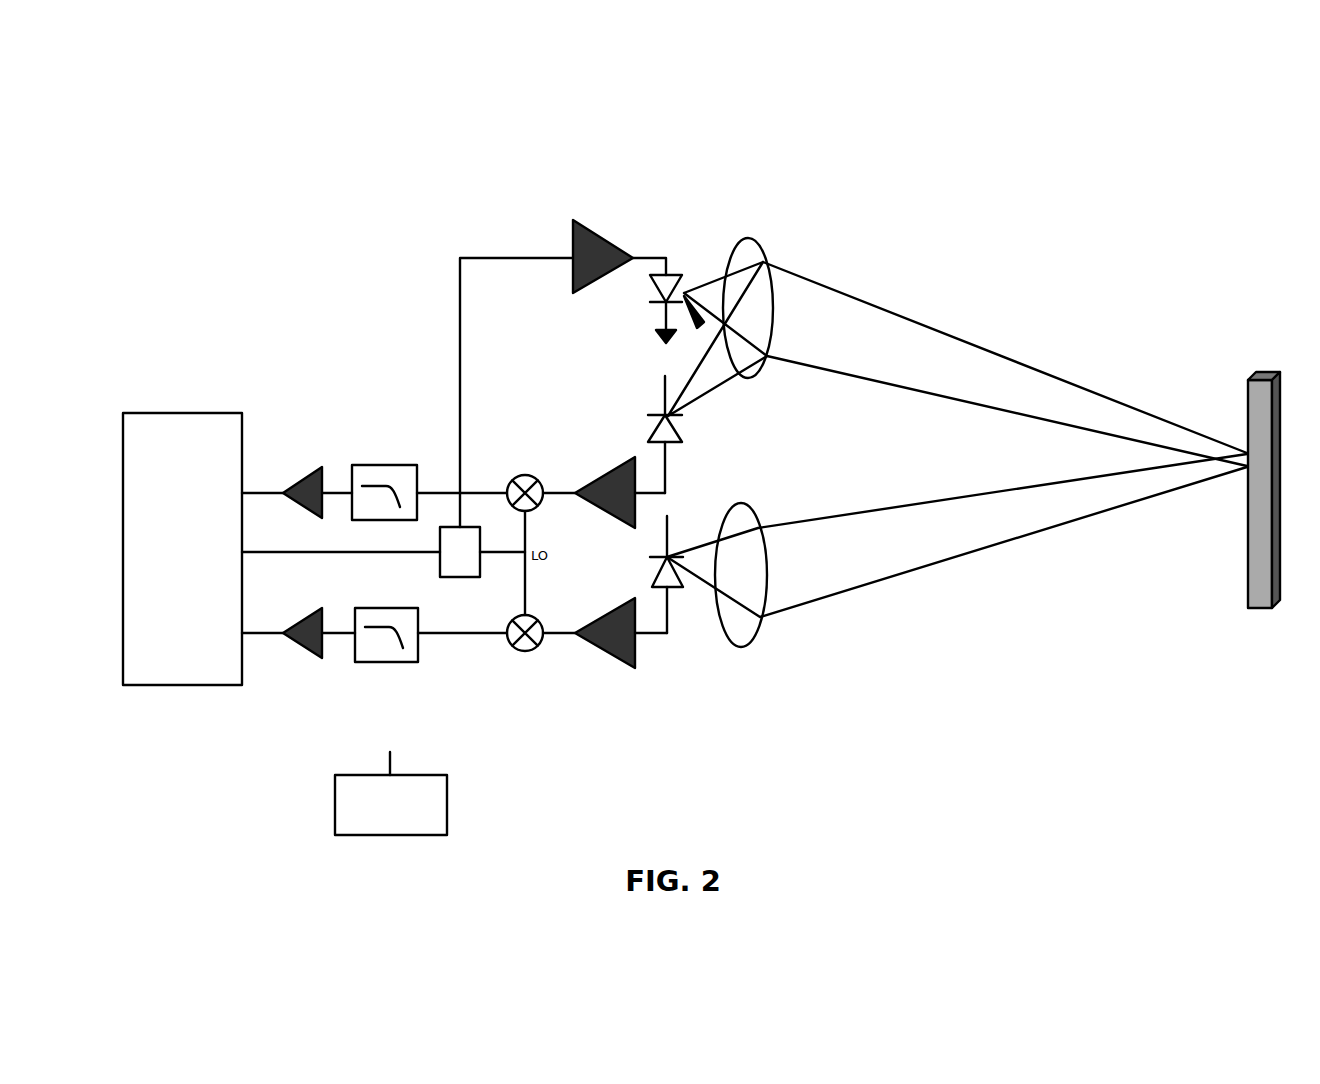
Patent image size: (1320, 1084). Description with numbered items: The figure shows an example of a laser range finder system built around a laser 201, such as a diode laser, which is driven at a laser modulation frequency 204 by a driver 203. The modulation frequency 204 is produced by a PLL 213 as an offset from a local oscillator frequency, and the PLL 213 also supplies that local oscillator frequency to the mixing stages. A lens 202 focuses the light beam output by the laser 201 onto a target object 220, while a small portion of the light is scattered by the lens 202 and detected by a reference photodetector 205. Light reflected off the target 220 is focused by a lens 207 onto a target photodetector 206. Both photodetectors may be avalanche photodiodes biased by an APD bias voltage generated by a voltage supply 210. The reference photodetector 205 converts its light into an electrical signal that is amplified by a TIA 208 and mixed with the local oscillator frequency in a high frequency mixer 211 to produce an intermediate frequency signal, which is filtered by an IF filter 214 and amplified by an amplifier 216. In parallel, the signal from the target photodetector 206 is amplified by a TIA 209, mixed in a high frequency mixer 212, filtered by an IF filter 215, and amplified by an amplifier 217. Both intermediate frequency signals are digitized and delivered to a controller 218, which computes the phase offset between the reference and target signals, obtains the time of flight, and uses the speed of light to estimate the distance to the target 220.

The laser 201 is at (694, 252).
The lens 202 is at (775, 234).
The driver 203 is at (608, 223).
The laser modulation frequency 204 is at (475, 258).
The reference photodetector 205 is at (694, 437).
The target photodetector 206 is at (688, 534).
The lens 207 is at (774, 500).
The TIA 208 is at (604, 523).
The TIA 209 is at (604, 602).
The voltage supply 210 is at (391, 783).
The high frequency mixer 211 is at (525, 475).
The high frequency mixer 212 is at (527, 649).
The PLL 213 is at (447, 577).
The IF filter 214 is at (367, 465).
The IF filter 215 is at (360, 608).
The amplifier 216 is at (310, 470).
The amplifier 217 is at (310, 615).
The controller 218 is at (223, 412).
The target object 220 is at (1238, 363).